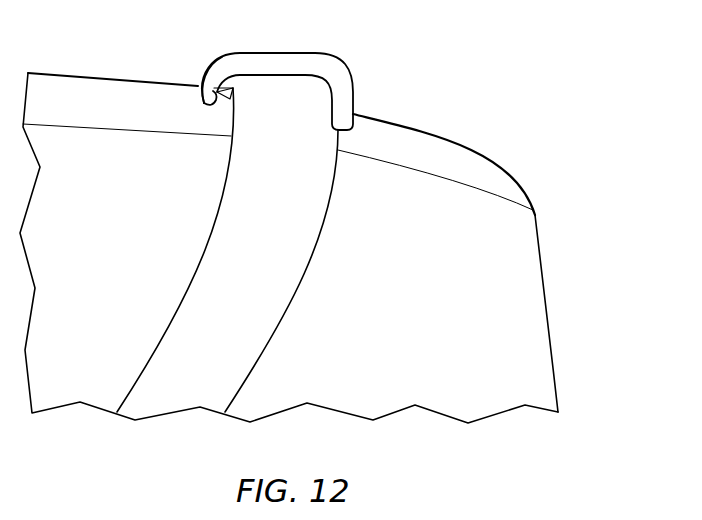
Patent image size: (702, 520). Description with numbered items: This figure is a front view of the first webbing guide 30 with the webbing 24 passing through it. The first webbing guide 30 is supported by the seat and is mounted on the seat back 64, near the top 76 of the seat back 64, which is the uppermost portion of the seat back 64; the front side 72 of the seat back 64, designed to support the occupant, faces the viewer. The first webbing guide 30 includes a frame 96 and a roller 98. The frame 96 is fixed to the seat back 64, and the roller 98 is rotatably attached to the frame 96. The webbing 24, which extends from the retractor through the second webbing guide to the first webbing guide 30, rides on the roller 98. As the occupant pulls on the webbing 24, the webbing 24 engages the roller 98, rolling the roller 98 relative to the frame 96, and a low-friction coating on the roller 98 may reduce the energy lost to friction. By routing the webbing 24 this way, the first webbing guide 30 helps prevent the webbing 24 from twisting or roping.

The webbing 24 is at (290, 238).
The first webbing guide 30 is at (333, 75).
The seat back 64 is at (517, 292).
The front side 72 is at (116, 249).
The top 76 is at (452, 143).
The frame 96 is at (218, 70).
The roller 98 is at (229, 102).